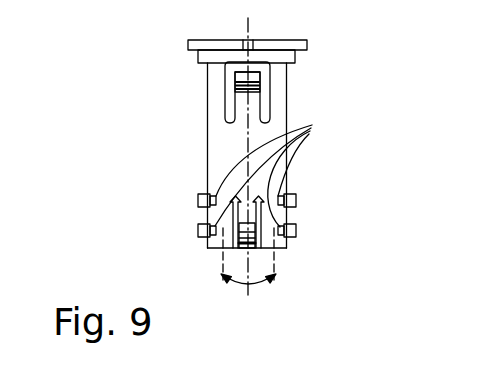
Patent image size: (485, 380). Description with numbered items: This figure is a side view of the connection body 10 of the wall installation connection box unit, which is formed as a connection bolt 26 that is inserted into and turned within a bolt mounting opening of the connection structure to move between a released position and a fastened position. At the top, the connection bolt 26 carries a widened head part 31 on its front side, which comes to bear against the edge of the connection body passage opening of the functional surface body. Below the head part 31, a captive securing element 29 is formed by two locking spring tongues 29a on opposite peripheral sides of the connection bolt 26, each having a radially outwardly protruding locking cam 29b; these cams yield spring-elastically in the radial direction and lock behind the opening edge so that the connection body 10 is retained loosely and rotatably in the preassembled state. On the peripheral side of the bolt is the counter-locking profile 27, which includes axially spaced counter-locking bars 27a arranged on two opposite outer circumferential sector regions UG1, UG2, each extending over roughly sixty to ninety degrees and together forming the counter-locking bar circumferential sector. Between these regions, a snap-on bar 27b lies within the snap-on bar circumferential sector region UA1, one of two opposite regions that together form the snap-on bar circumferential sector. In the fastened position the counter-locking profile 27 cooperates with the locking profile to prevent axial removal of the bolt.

The widened head part 31 is at (188, 44).
The connection body 10 is at (177, 171).
The connection bolt 26 is at (208, 131).
The captive securing element 29 is at (240, 98).
The locking spring tongues 29a is at (260, 100).
The locking cam 29b is at (250, 75).
The counter-locking profile 27 is at (280, 172).
The counter-locking bars 27a is at (198, 201).
The snap-on bar 27b is at (257, 248).
The counter-locking bar circumferential sector region UG2 is at (208, 194).
The counter-locking bar circumferential sector region UG1 is at (286, 197).
The snap-on bar circumferential sector region UA1 is at (249, 287).